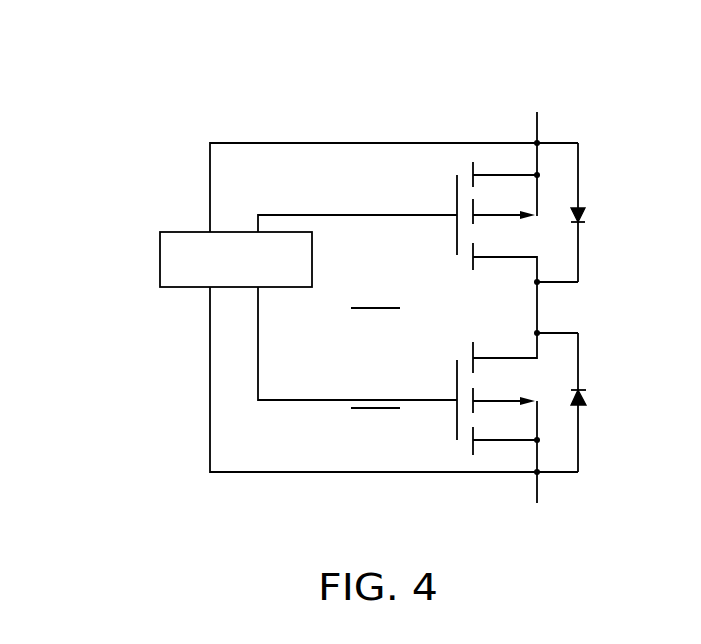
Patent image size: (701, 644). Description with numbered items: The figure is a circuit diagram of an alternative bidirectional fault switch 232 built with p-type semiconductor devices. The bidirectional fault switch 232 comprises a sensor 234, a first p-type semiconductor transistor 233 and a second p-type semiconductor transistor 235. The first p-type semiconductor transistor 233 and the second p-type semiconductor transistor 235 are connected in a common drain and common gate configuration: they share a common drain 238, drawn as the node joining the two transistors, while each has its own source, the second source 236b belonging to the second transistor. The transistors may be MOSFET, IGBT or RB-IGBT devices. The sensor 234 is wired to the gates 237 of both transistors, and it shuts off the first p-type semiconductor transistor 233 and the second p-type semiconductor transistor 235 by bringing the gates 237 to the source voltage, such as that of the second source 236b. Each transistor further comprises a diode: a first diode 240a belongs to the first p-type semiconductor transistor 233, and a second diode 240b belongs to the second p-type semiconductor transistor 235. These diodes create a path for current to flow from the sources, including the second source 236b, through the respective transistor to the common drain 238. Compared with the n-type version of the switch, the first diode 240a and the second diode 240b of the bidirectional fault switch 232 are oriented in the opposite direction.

The bidirectional fault switch 232 is at (310, 249).
The first p-type semiconductor transistor (Q1) 233 is at (492, 215).
The sensor 234 is at (160, 255).
The second p-type semiconductor transistor (Q2) 235 is at (492, 401).
The second source 236b is at (537, 143).
The gates 237 is at (390, 217).
The common drain 238 is at (538, 308).
The first diode (D1) 240a is at (584, 225).
The second diode (D2) 240b is at (585, 388).